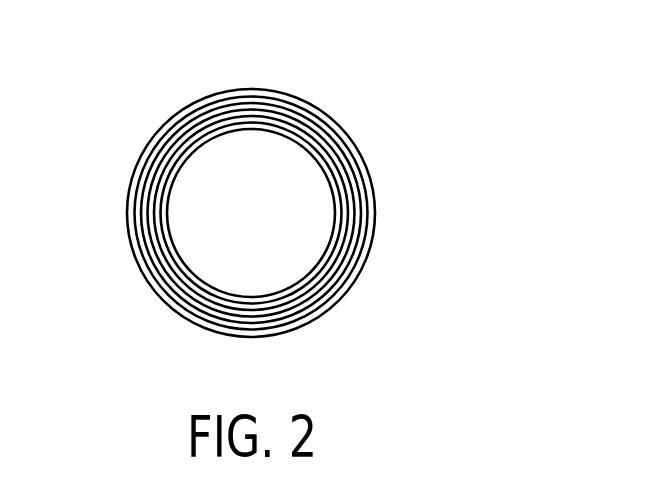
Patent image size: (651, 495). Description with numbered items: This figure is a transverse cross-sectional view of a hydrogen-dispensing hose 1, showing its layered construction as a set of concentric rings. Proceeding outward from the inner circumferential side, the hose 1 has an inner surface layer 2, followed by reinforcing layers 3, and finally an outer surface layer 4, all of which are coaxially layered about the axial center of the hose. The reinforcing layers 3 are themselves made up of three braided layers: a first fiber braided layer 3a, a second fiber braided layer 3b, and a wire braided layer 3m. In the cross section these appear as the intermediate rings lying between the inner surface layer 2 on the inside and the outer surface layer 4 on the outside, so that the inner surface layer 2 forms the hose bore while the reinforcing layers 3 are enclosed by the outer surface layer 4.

The hydrogen-dispensing hose 1 is at (155, 128).
The inner surface layer 2 is at (305, 278).
The reinforcing layers 3 is at (348, 33).
The first fiber braided layer 3a is at (338, 197).
The second fiber braided layer 3b is at (328, 155).
The wire braided layer 3m is at (303, 115).
The outer surface layer 4 is at (158, 290).